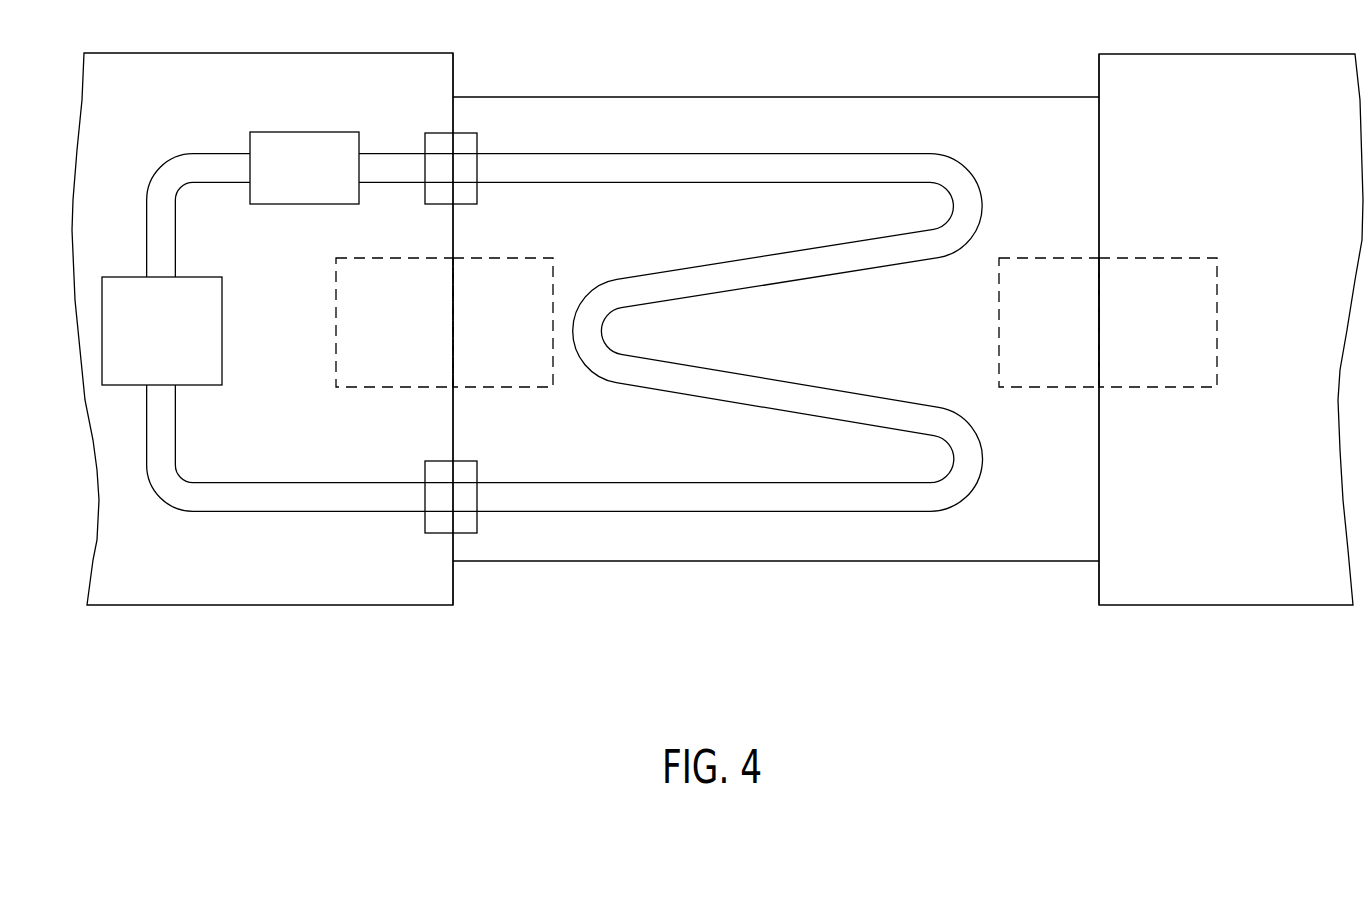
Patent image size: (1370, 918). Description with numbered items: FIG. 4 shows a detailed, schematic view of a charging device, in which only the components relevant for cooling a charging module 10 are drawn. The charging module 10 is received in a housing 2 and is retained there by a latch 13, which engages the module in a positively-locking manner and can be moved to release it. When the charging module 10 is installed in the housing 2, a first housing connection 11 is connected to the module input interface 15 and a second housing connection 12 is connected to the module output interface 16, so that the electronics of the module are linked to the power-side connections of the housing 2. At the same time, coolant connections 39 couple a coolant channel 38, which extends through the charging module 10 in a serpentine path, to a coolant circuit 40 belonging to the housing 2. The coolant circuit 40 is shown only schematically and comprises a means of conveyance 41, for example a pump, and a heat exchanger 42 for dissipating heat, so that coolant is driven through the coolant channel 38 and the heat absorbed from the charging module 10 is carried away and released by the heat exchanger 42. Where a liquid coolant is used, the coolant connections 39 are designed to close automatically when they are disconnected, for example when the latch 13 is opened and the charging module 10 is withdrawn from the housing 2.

The housing 2 is at (240, 643).
The charging module 10 is at (840, 97).
The first housing connection 11 is at (337, 317).
The second housing connection 12 is at (1218, 313).
The latch 13 is at (1153, 608).
The module input interface 15 is at (512, 258).
The module output interface 16 is at (998, 313).
The coolant channel 38 is at (708, 522).
The coolant connections 39 is at (490, 128).
The coolant circuit 40 is at (185, 103).
The means of conveyance 41 is at (222, 333).
The heat exchanger 42 is at (315, 130).